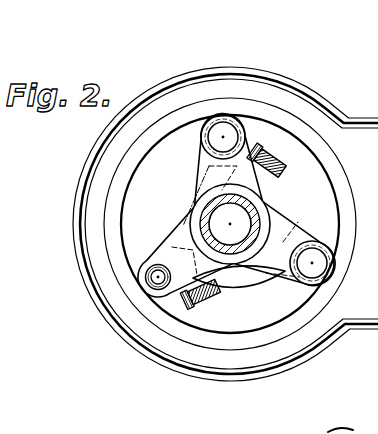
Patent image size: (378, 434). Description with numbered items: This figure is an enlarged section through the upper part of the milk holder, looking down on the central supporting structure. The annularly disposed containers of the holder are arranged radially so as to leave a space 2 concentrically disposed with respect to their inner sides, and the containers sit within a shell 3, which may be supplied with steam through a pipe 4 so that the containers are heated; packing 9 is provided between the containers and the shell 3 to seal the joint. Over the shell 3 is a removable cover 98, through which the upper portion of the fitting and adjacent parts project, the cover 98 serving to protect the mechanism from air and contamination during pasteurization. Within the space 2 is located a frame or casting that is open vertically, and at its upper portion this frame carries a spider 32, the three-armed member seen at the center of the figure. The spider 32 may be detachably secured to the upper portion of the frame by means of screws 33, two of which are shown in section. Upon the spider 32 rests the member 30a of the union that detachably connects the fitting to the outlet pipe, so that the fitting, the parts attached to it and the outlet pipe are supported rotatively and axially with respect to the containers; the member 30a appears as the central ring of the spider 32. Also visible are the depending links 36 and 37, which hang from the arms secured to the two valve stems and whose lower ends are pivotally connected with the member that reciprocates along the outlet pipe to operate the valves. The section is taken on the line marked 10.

The space 2 is at (240, 292).
The shell 3 is at (72, 221).
The steam pipe 4 is at (0, 433).
The packing 9 is at (0, 284).
The removable cover 98 is at (8, 229).
The section line 10 is at (270, 79).
The member of union 30a is at (203, 215).
The spider 32 is at (288, 232).
The screws 33 is at (224, 133).
The depending link 36 is at (221, 292).
The depending link 37 is at (283, 172).